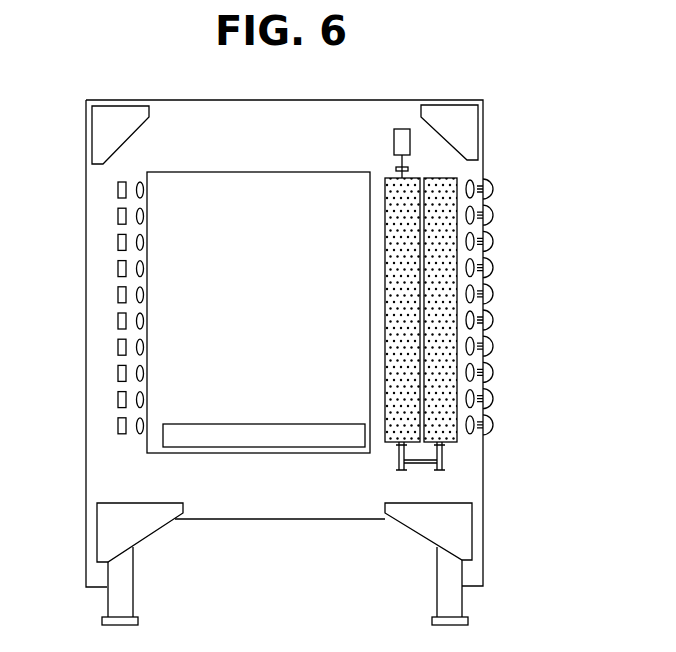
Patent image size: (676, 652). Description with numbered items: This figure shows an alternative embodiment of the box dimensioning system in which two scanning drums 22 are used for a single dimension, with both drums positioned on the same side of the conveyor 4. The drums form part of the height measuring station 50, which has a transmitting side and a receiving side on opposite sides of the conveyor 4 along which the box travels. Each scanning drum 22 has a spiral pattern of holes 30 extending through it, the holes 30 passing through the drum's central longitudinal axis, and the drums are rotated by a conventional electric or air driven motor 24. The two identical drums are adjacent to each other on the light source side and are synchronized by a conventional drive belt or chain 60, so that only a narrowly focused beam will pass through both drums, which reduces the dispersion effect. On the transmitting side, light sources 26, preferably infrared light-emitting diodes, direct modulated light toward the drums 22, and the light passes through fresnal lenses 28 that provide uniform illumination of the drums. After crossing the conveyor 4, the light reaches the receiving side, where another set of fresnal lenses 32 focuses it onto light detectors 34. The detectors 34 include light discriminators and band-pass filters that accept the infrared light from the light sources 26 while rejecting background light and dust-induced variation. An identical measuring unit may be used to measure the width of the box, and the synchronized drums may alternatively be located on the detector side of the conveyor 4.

The conveyor 4 is at (267, 422).
The scanning drum 22 is at (424, 322).
The motor 24 is at (403, 132).
The light sources 26 is at (489, 345).
The fresnal lenses 28 is at (488, 279).
The holes 30 is at (398, 240).
The fresnal lenses 32 is at (143, 280).
The light detectors 34 is at (118, 269).
The height measuring station 50 is at (103, 397).
The drive belt or chain 60 is at (418, 467).